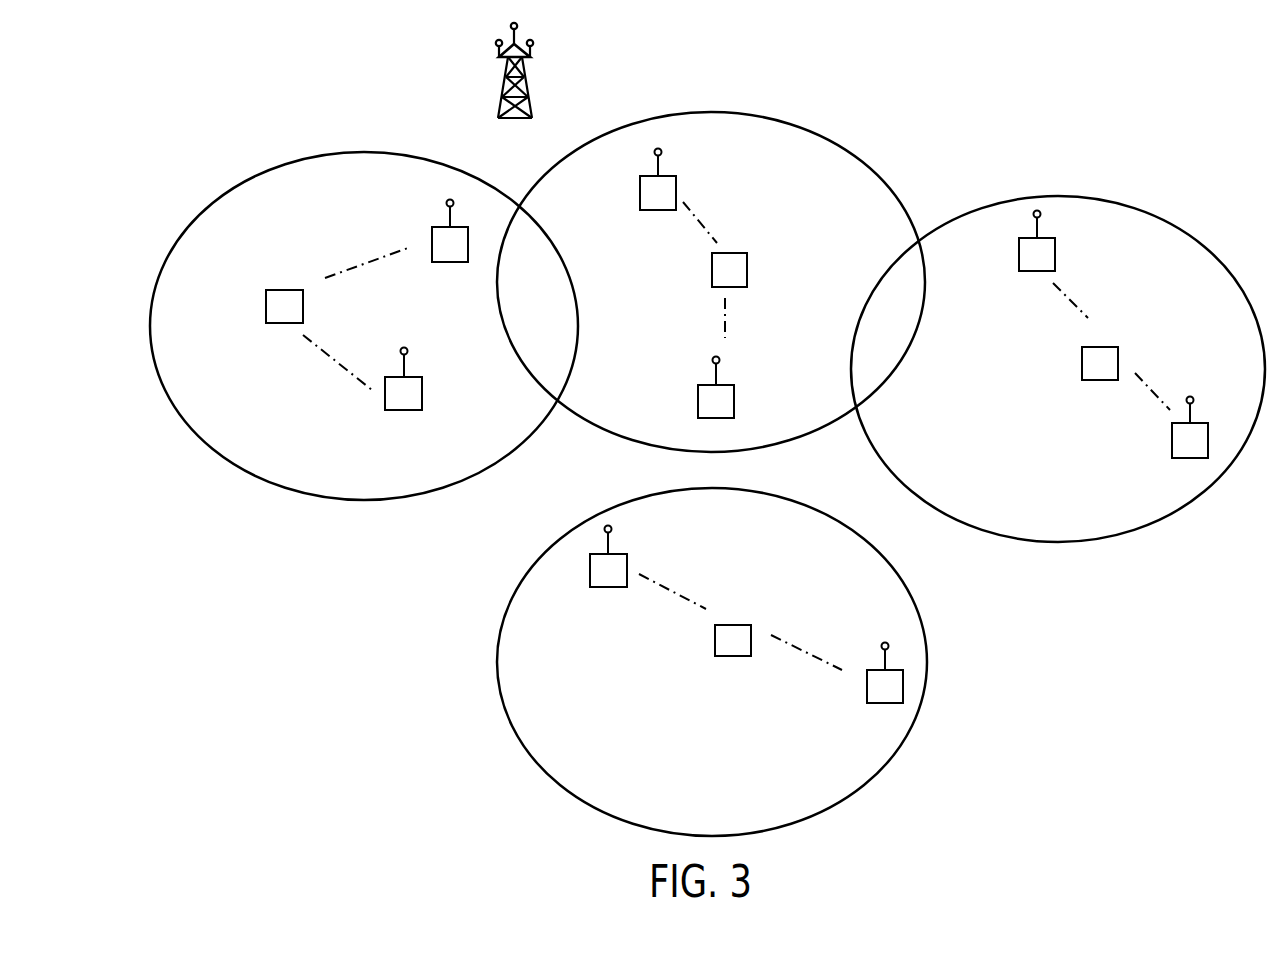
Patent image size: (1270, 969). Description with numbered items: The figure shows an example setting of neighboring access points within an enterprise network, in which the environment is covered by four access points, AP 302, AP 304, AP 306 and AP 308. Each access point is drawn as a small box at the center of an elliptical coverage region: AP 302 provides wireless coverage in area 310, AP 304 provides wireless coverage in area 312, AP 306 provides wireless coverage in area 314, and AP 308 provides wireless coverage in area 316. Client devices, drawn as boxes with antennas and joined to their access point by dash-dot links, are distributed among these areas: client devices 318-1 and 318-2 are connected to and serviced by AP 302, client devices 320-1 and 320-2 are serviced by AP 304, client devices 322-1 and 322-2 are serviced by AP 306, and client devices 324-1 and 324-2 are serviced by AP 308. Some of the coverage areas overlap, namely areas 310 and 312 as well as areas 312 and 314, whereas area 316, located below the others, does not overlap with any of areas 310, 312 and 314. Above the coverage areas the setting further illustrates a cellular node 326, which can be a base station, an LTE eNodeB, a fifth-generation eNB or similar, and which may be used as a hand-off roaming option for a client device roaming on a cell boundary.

The access point 302 is at (283, 290).
The access point 304 is at (725, 254).
The access point 306 is at (1098, 347).
The access point 308 is at (732, 625).
The coverage area 310 is at (189, 432).
The coverage area 312 is at (633, 450).
The coverage area 314 is at (1015, 540).
The coverage area 316 is at (497, 673).
The client device 318-1 is at (450, 262).
The client device 318-2 is at (422, 395).
The client device 320-1 is at (734, 402).
The client device 320-2 is at (657, 210).
The client device 322-1 is at (1035, 271).
The client device 322-2 is at (1172, 442).
The client device 324-1 is at (607, 587).
The client device 324-2 is at (867, 688).
The cellular node 326 is at (504, 89).